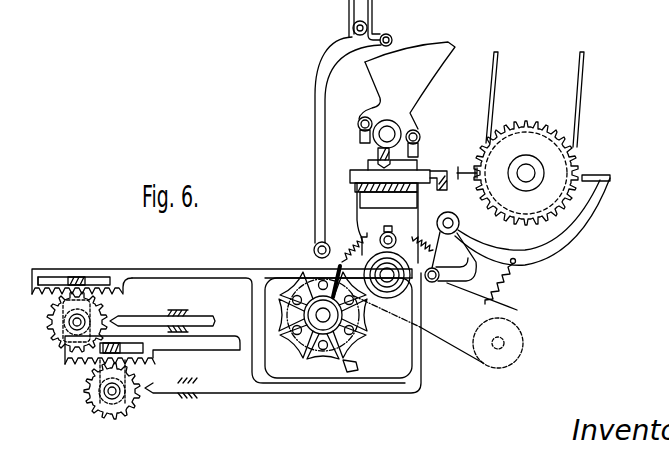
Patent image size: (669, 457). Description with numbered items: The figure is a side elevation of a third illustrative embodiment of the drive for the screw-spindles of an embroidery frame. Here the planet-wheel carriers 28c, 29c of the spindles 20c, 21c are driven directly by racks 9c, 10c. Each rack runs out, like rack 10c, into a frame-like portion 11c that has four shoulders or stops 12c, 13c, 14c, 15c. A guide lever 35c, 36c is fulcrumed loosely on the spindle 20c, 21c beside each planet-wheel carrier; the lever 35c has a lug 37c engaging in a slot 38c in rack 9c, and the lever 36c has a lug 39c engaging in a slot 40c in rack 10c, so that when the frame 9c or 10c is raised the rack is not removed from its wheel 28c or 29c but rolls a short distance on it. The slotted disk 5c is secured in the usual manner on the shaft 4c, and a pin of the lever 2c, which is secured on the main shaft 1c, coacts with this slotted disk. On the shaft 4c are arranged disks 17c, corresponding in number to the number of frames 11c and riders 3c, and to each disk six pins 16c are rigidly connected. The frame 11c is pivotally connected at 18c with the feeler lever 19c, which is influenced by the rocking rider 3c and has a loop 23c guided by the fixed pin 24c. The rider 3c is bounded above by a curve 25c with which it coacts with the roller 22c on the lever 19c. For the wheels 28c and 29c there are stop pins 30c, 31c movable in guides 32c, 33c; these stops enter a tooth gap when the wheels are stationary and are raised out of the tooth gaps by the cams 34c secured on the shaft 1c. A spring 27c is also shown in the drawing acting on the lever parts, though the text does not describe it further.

The main shaft 1c is at (390, 280).
The lever 2c is at (390, 230).
The rider 3c is at (406, 99).
The shaft 4c is at (323, 318).
The slotted disk 5c is at (313, 347).
The rack 9c is at (157, 350).
The rack 10c is at (115, 274).
The frame-like portion 11c is at (283, 270).
The shoulder or stop 12c is at (267, 280).
The shoulder or stop 13c is at (335, 268).
The shoulder or stop 14c is at (355, 362).
The shoulder or stop 15c is at (290, 368).
The pins 16c is at (312, 290).
The disks 17c is at (347, 371).
The pivot 18c is at (316, 244).
The feeler lever 19c is at (322, 197).
The spindle 20c is at (114, 400).
The spindle 21c is at (75, 325).
The roller 22c is at (390, 29).
The loop 23c is at (374, 13).
The fixed pin 24c is at (353, 29).
The curve 25c is at (426, 45).
The spring 27c is at (387, 235).
The planet-wheel carrier 28c is at (130, 406).
The planet-wheel carrier 29c is at (60, 323).
The stop pin 30c is at (241, 388).
The stop pin 31c is at (203, 316).
The guide 32c is at (192, 396).
The guide 33c is at (175, 312).
The cams 34c is at (428, 284).
The guide lever 35c is at (100, 375).
The guide lever 36c is at (52, 306).
The lug 37c is at (100, 353).
The slot 38c is at (145, 358).
The lug 39c is at (80, 281).
The slot 40c is at (50, 281).